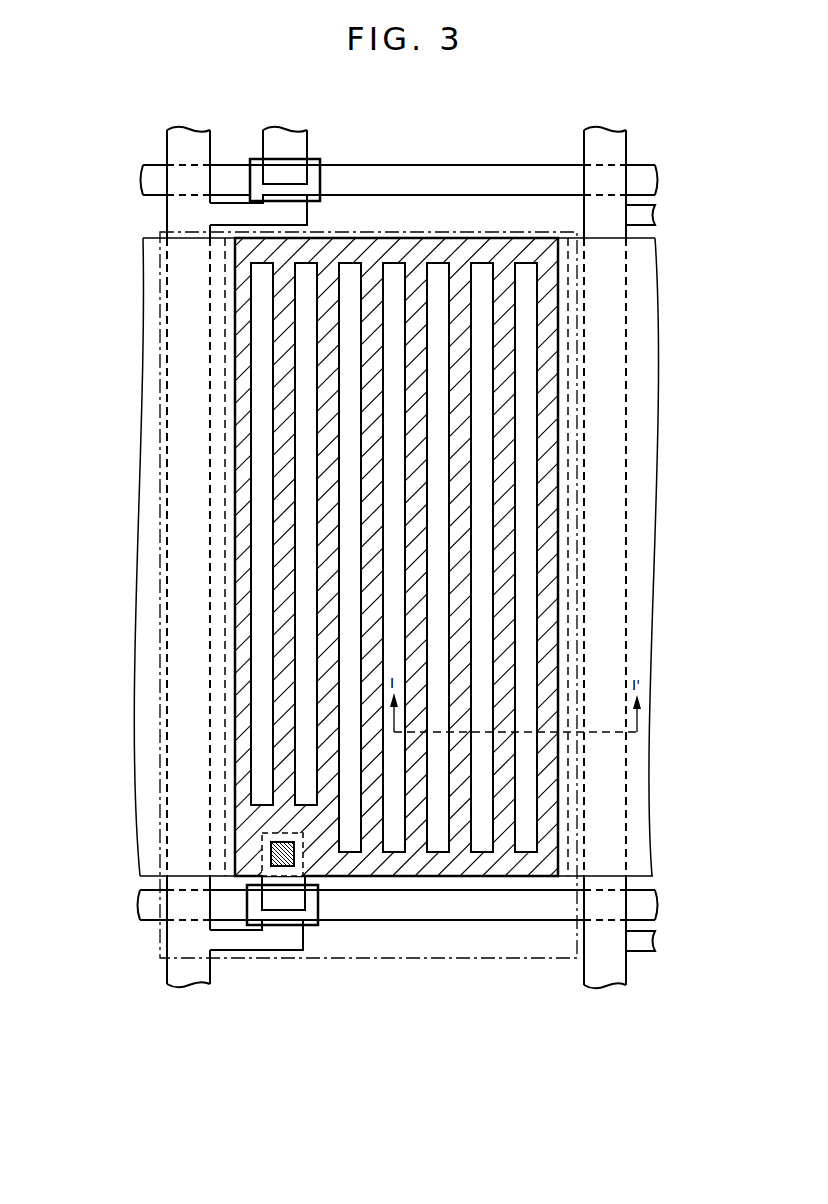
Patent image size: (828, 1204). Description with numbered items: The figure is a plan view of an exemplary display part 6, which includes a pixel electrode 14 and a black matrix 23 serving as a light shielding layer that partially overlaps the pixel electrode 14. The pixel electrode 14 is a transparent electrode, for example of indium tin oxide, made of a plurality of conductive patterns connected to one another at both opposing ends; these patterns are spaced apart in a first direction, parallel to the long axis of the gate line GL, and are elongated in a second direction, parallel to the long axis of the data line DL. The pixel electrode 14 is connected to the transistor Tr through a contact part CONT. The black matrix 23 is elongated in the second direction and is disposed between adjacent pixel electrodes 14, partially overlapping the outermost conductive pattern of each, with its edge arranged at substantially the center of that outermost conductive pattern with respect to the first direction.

The pixel electrode 14 is at (243, 258).
The black matrix 23 is at (145, 615).
The display part 6 is at (515, 956).
The gate line GL is at (432, 168).
The data line DL is at (176, 517).
The transistor Tr is at (315, 905).
The contact part CONT is at (262, 848).